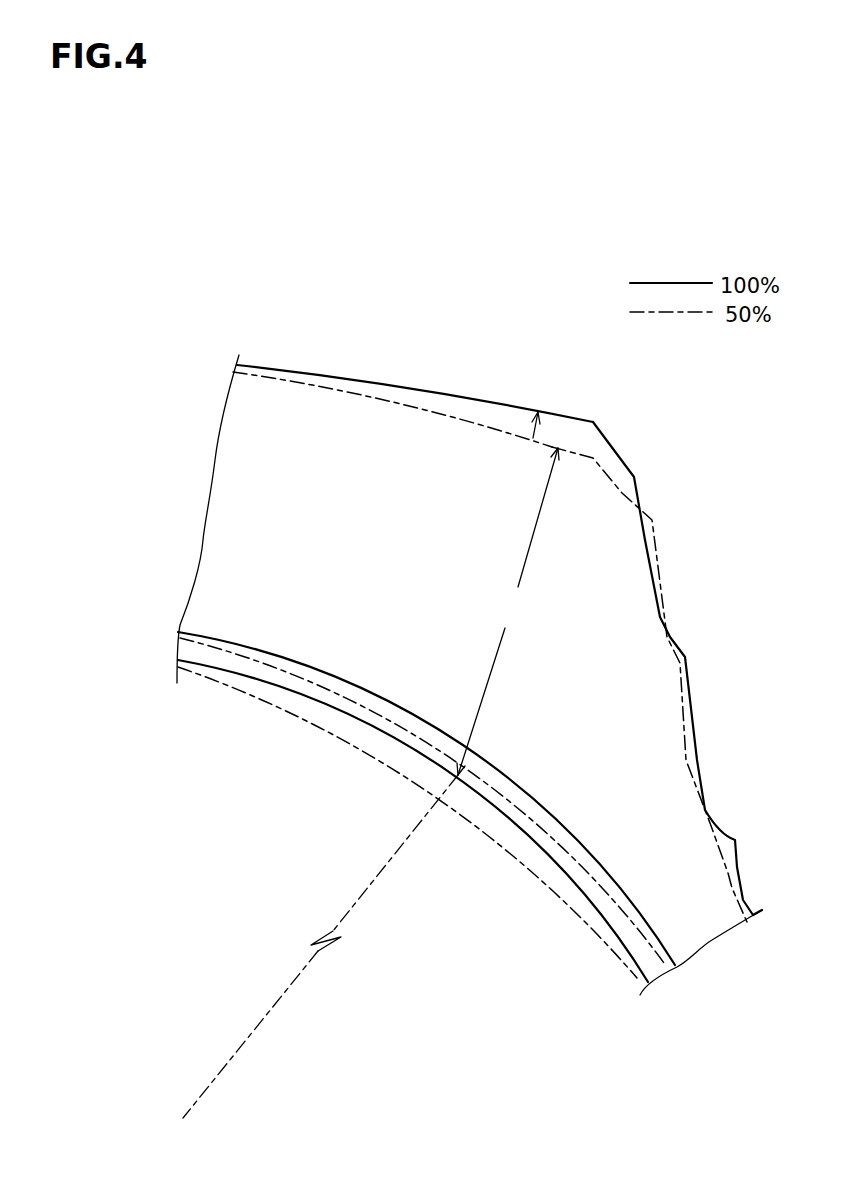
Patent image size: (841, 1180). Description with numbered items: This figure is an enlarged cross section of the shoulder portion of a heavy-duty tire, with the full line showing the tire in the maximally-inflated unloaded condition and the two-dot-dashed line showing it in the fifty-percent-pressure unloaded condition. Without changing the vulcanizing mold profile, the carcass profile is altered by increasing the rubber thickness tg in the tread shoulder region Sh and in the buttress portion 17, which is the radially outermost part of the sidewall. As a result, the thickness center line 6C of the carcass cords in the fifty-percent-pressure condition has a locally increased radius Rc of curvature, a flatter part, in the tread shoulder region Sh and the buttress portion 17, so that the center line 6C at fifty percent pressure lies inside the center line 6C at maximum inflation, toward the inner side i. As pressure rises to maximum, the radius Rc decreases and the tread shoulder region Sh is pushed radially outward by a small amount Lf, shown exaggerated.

The tread shoulder region Sh is at (428, 378).
The small amount of radially outward displacement Lf is at (535, 435).
The buttress portion 17 is at (677, 638).
The thickness center line of the carcass cords 6C is at (265, 650).
The rubber thickness tg is at (508, 611).
The radius of curvature Rc is at (303, 960).
The inner side i is at (238, 887).